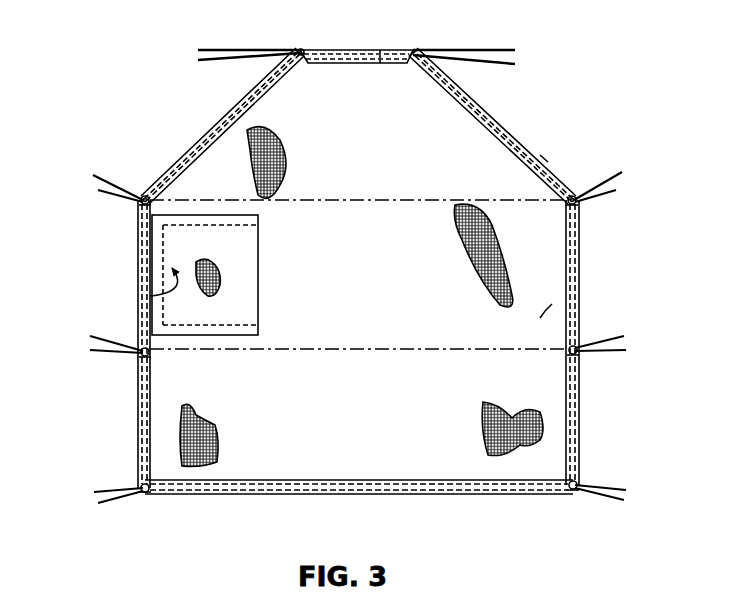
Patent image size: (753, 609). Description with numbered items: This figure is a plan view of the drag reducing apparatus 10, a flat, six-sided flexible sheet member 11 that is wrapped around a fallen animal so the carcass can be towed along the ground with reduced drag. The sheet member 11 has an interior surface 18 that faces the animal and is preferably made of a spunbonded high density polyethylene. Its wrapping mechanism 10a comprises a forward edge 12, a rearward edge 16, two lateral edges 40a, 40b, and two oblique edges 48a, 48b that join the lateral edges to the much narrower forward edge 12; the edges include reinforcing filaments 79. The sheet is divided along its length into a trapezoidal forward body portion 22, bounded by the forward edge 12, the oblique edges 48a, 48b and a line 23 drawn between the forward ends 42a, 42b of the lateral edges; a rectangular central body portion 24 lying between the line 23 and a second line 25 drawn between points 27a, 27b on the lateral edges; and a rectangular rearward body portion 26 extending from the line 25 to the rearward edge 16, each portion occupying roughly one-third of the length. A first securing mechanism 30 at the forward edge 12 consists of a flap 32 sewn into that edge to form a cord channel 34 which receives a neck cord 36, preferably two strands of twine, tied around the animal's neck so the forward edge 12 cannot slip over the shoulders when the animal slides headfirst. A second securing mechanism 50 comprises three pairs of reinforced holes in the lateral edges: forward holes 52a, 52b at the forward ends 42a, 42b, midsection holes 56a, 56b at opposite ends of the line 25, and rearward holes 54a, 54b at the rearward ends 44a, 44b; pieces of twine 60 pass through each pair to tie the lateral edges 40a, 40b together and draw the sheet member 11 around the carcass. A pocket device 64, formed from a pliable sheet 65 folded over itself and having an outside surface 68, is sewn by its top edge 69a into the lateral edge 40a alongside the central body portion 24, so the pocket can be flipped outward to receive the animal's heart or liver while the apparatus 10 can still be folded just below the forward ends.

The drag reducing apparatus 10 is at (598, 50).
The wrapping mechanism 10a is at (536, 152).
The flexible sheet member 11 is at (544, 318).
The forward edge 12 is at (326, 48).
The rearward edge 16 is at (426, 492).
The interior surface 18 is at (170, 431).
The forward body portion 22 is at (362, 128).
The line 23 is at (352, 200).
The central body portion 24 is at (376, 280).
The line 25 is at (350, 348).
The rearward body portion 26 is at (384, 427).
The point 27a is at (140, 360).
The point 27b is at (580, 360).
The first securing mechanism 30 is at (298, 48).
The flap 32 is at (362, 64).
The cord channel 34 is at (300, 62).
The neck cord 36 is at (250, 51).
The lateral edge 40a is at (137, 262).
The lateral edge 40b is at (581, 268).
The forward end 42a is at (140, 192).
The forward end 42b is at (580, 188).
The rearward end 44a is at (146, 498).
The rearward end 44b is at (576, 498).
The oblique edge 48a is at (200, 146).
The oblique edge 48b is at (496, 116).
The second securing mechanism 50 is at (118, 208).
The forward hole 52a is at (138, 212).
The forward hole 52b is at (580, 212).
The rearward hole 54a is at (140, 482).
The rearward hole 54b is at (580, 480).
The midsection hole 56a is at (140, 346).
The midsection hole 56b is at (580, 343).
The piece of twine 60 is at (96, 186).
The pocket device 64 is at (234, 243).
The pliable sheet 65 is at (242, 278).
The outside surface 68 is at (250, 315).
The window flap hinge 69a is at (150, 296).
The fastener strip 79 is at (150, 413).